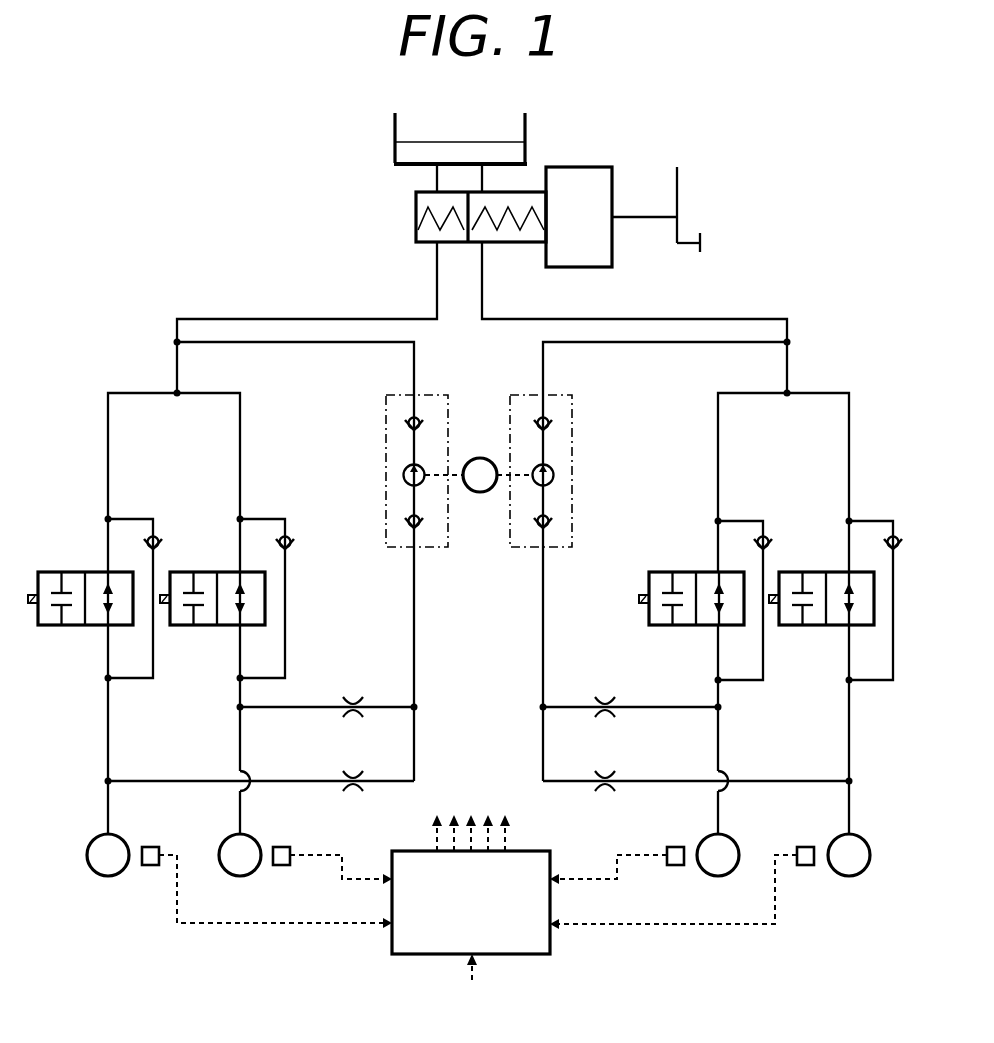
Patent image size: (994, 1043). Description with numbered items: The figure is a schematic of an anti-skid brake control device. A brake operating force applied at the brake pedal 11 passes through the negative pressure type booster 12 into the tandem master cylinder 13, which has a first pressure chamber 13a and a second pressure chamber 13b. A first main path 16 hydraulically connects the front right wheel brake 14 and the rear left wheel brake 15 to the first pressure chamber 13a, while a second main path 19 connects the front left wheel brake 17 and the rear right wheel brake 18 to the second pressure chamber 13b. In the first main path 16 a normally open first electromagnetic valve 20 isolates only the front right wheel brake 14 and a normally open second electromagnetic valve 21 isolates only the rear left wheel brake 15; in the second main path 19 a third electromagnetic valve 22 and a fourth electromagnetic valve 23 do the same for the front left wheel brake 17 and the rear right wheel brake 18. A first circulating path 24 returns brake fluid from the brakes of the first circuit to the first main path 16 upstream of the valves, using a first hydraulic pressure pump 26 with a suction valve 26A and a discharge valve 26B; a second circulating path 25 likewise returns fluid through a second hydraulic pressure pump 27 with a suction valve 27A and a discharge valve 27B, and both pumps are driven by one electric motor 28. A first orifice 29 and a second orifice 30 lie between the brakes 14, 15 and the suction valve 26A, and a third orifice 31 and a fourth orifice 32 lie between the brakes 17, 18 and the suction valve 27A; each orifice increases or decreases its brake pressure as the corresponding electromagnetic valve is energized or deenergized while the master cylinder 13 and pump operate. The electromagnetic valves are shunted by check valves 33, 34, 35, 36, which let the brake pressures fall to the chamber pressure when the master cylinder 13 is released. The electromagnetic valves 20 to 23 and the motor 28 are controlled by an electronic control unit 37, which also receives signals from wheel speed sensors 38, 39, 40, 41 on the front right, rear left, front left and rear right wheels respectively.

The brake pedal 11 is at (677, 177).
The negative pressure type booster 12 is at (596, 167).
The tandem master cylinder 13 is at (452, 240).
The first pressure chamber 13a is at (506, 248).
The second pressure chamber 13b is at (422, 248).
The front right wheel brake 14 is at (845, 878).
The rear left wheel brake 15 is at (707, 876).
The first main path 16 is at (771, 315).
The front left wheel brake 17 is at (103, 878).
The rear right wheel brake 18 is at (227, 876).
The second main path 19 is at (196, 315).
The first electromagnetic valve 20 is at (814, 572).
The second electromagnetic valve 21 is at (682, 572).
The third electromagnetic valve 22 is at (72, 572).
The fourth electromagnetic valve 23 is at (204, 572).
The first circulating path 24 is at (671, 696).
The second circulating path 25 is at (285, 696).
The first hydraulic pressure pump 26 is at (574, 448).
The suction valve 26A is at (553, 521).
The discharge valve 26B is at (553, 422).
The second hydraulic pressure pump 27 is at (385, 448).
The suction valve 27A is at (405, 521).
The discharge valve 27B is at (405, 422).
The electric motor 28 is at (482, 458).
The first orifice 29 is at (606, 796).
The second orifice 30 is at (607, 695).
The third orifice 31 is at (352, 796).
The fourth orifice 32 is at (354, 695).
The check valve 33 is at (898, 538).
The check valve 34 is at (770, 538).
The check valve 35 is at (160, 538).
The check valve 36 is at (290, 538).
The electronic control unit 37 is at (535, 956).
The wheel speed sensor 38 is at (802, 868).
The wheel speed sensor 39 is at (673, 868).
The wheel speed sensor 40 is at (145, 868).
The wheel speed sensor 41 is at (277, 868).